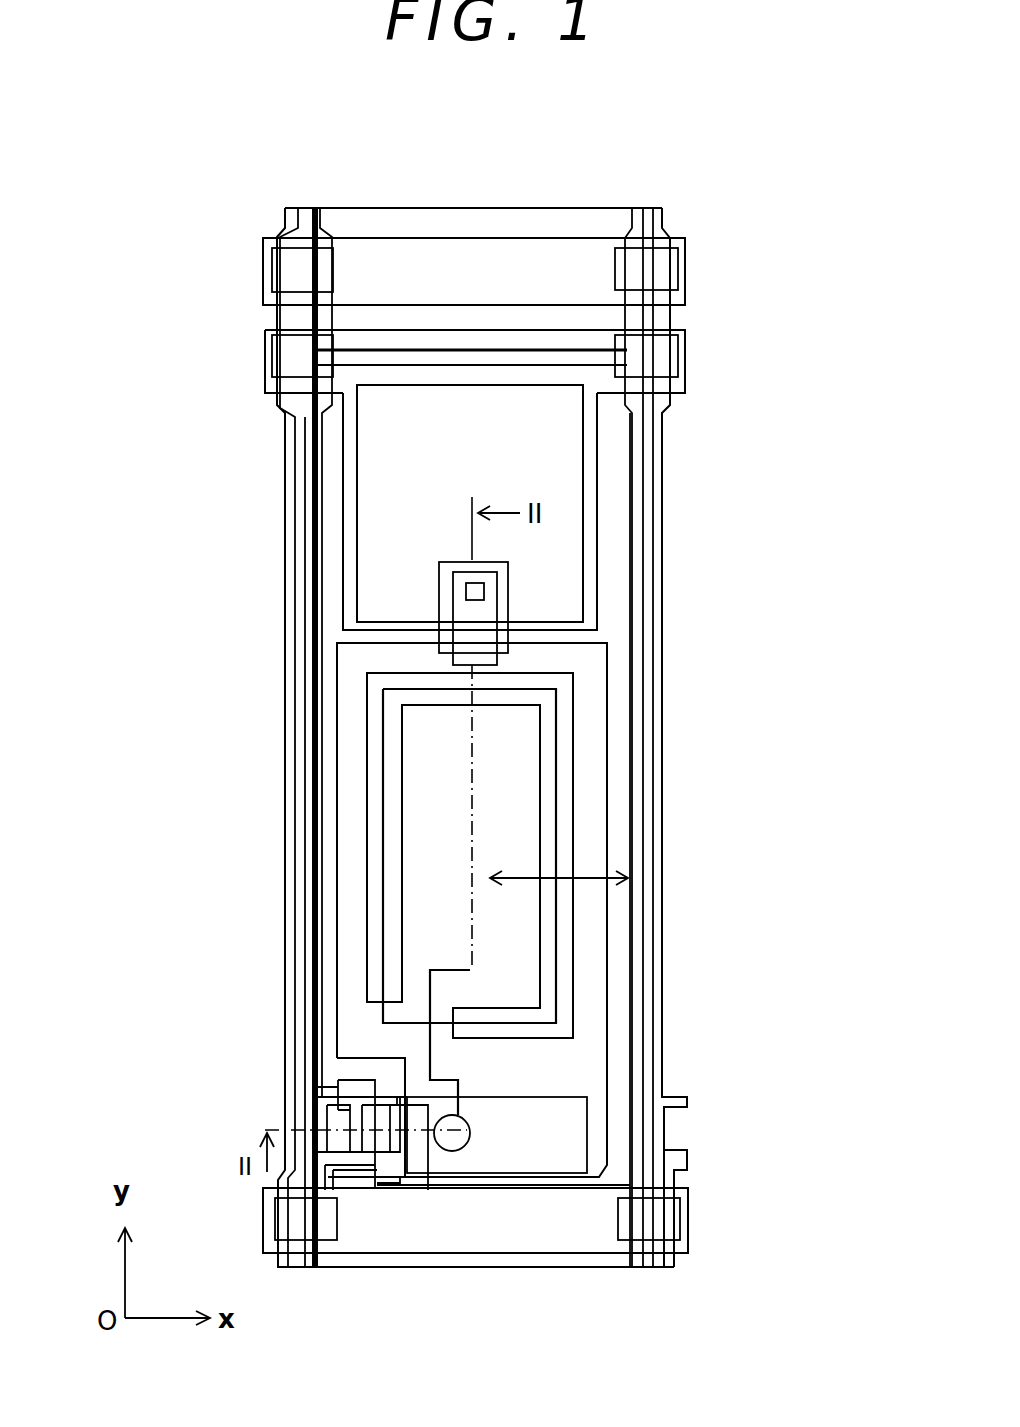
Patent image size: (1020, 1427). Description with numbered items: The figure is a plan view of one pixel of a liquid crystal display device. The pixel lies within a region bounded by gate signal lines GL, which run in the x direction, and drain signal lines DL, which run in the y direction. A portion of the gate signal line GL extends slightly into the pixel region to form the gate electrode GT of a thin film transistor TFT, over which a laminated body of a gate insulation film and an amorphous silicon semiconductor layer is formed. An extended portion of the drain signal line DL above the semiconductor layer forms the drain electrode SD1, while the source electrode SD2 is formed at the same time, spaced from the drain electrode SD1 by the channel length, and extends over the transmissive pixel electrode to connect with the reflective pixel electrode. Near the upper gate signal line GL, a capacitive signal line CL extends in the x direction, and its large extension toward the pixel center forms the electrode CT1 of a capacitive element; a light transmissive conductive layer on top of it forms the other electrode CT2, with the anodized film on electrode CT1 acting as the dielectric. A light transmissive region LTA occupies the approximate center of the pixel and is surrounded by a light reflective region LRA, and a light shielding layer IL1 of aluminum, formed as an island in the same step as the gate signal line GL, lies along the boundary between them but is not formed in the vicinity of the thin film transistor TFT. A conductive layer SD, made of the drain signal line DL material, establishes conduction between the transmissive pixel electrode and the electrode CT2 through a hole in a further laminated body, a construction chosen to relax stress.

The drain signal line DL is at (301, 228).
The gate signal line GL is at (687, 262).
The capacitive signal line CL is at (687, 355).
The electrode CT1 is at (597, 468).
The electrode CT2 is at (583, 533).
The conductive layer SD is at (462, 631).
The light shielding layer IL1 is at (575, 728).
The light reflective region LRA is at (587, 870).
The light transmissive region LTA is at (513, 873).
The thin film transistor TFT is at (368, 1082).
The gate electrode GT is at (318, 1086).
The drain electrode SD1 is at (327, 1124).
The source electrode SD2 is at (383, 1143).